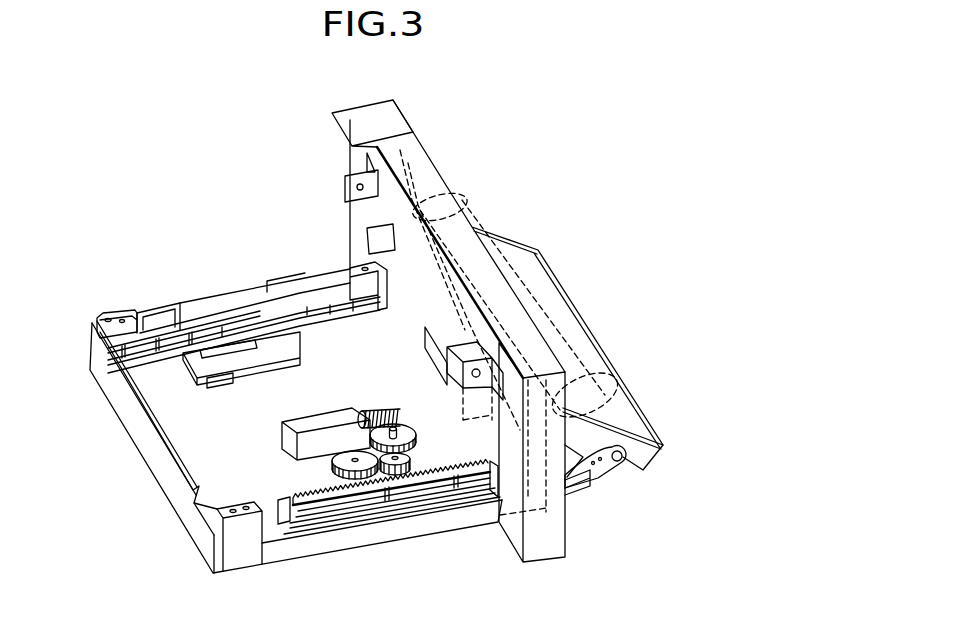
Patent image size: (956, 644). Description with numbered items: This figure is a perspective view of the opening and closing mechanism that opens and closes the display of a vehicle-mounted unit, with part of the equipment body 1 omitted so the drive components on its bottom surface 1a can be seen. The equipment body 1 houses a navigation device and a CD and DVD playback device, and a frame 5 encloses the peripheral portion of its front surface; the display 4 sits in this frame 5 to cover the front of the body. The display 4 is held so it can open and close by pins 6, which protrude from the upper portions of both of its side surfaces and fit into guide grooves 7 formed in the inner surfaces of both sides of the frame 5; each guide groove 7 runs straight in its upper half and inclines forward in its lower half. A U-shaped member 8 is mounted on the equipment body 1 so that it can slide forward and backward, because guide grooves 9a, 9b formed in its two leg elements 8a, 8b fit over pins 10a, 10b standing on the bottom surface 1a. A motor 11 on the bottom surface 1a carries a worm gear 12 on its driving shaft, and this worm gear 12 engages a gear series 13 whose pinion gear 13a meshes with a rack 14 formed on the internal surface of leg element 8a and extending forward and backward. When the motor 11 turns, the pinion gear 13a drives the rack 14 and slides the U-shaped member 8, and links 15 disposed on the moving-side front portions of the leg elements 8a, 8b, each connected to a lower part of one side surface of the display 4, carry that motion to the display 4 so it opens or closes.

The equipment body 1 is at (215, 268).
The bottom surface 1a is at (173, 436).
The display 4 is at (530, 274).
The frame 5 is at (547, 547).
The pins 6 is at (447, 205).
The guide grooves 7 is at (408, 163).
The U-shaped member 8 is at (445, 395).
The leg element 8a is at (343, 513).
The leg element 8b is at (213, 338).
The guide groove 9a is at (372, 516).
The guide groove 9b is at (268, 360).
The pin 10a is at (456, 488).
The pin 10b is at (314, 300).
The motor 11 is at (285, 438).
The worm gear 12 is at (370, 413).
The gear series 13 is at (338, 470).
The pinion gear 13a is at (433, 468).
The rack 14 is at (300, 480).
The links 15 is at (597, 468).